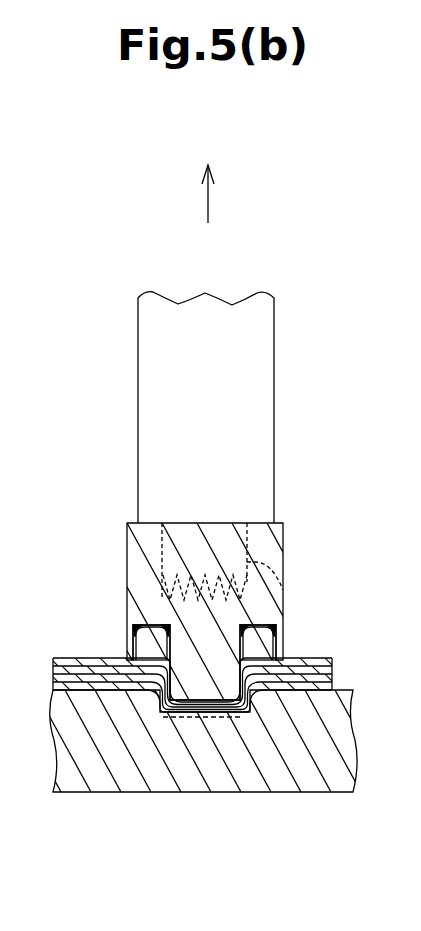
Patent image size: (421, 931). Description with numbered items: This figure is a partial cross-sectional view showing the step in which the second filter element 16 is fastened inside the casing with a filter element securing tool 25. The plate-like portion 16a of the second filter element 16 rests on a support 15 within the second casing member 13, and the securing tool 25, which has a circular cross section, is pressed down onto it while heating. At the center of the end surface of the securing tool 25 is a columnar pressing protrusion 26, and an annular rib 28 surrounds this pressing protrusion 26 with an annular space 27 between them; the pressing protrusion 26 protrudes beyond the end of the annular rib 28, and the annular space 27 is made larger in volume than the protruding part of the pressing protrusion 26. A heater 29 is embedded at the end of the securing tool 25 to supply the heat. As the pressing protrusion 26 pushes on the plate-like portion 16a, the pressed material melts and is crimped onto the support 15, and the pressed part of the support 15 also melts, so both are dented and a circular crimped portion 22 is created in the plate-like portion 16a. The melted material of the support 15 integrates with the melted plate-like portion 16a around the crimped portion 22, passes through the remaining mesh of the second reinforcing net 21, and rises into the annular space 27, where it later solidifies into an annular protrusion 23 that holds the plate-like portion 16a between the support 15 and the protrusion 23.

The second casing member 13 is at (105, 783).
The support 15 is at (282, 783).
The second filter element 16 is at (55, 657).
The plate-like portion 16a is at (332, 658).
The second reinforcing net 21 is at (108, 667).
The crimped portion 22 is at (193, 695).
The protrusion 23 is at (148, 625).
The securing tool 25 is at (283, 545).
The pressing protrusion 26 is at (232, 712).
The annular space 27 is at (272, 622).
The annular rib 28 is at (283, 643).
The heater 29 is at (283, 592).